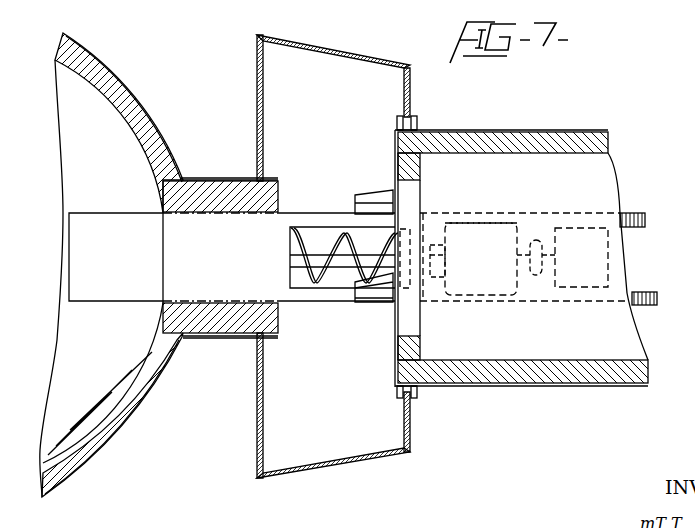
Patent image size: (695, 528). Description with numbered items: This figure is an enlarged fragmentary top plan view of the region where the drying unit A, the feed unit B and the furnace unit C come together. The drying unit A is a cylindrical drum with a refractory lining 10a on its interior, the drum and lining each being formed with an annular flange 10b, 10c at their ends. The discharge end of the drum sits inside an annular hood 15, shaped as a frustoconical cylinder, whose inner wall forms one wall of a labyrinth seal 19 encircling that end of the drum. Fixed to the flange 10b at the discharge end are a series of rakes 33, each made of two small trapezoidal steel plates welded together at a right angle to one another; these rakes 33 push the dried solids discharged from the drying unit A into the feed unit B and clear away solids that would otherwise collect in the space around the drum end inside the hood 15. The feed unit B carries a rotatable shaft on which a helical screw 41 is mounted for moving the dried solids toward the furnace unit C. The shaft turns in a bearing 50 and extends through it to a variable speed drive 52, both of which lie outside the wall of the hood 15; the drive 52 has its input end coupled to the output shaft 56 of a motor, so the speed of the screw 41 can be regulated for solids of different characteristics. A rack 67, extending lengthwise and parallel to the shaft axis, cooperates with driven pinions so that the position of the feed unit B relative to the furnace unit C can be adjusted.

The drying unit A is at (603, 178).
The feed unit B is at (100, 233).
The furnace unit C is at (78, 152).
The annular hood 15 is at (337, 52).
The labyrinth seal 19 is at (415, 123).
The rakes 33 is at (355, 203).
The helical screw 41 is at (318, 278).
The bearing 50 is at (481, 259).
The variable speed drive 52 is at (503, 228).
The output shaft 56 is at (582, 280).
The rack 67 is at (635, 227).
The refractory lining 10a is at (499, 362).
The annular flange 10b is at (421, 172).
The annular flange 10c is at (421, 347).